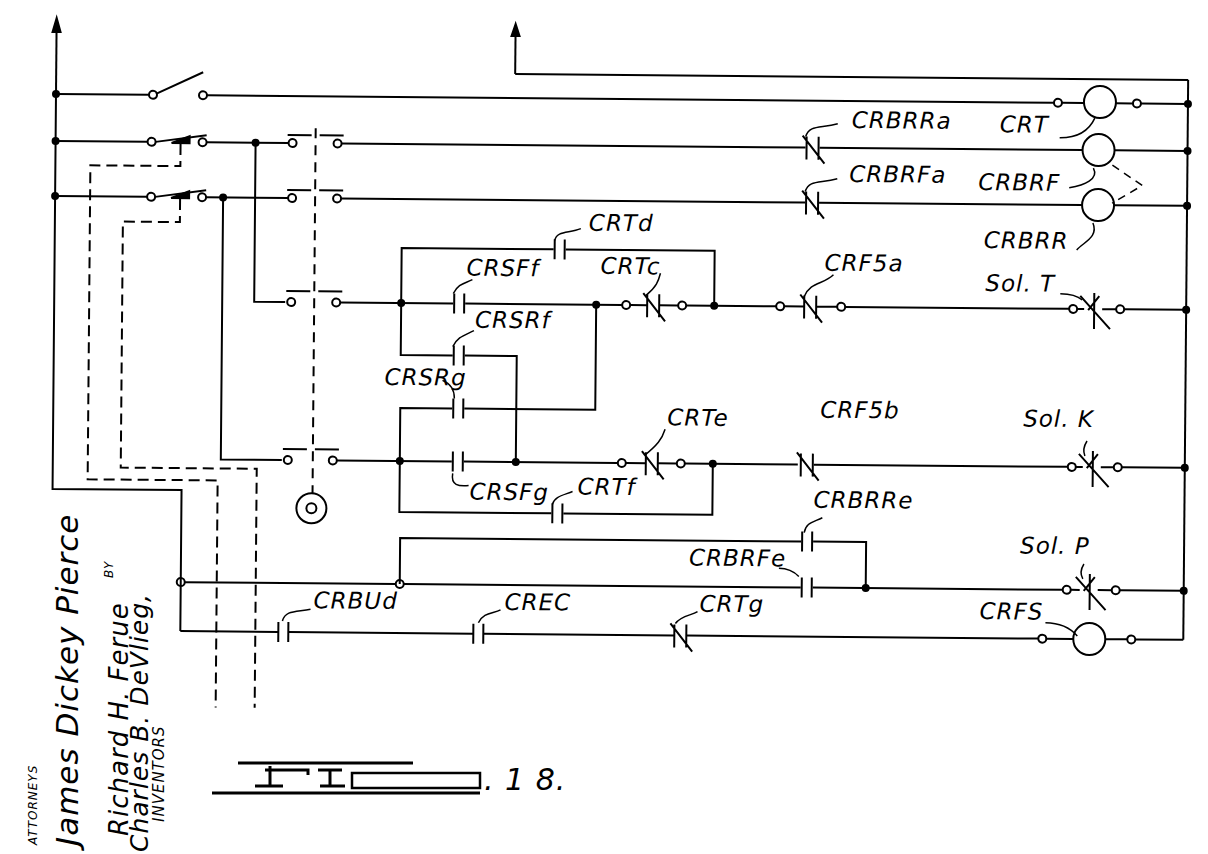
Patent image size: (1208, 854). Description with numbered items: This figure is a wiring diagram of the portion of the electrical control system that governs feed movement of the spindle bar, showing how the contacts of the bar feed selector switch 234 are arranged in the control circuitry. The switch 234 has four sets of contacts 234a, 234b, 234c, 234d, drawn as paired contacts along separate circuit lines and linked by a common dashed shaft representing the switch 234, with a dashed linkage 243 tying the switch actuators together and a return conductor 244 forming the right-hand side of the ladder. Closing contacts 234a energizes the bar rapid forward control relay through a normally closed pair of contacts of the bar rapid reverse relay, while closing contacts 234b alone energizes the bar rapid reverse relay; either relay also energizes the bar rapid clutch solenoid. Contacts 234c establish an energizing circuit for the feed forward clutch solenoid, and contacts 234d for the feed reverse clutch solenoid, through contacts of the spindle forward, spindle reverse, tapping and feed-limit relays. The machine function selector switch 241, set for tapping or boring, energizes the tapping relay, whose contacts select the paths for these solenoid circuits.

The machine function selector switch 241 is at (203, 71).
The contacts of the bar feed selector switch 234a is at (341, 145).
The contacts of the bar feed selector switch 234b is at (341, 200).
The contacts of the bar feed selector switch 234c is at (341, 305).
The contacts of the bar feed selector switch 234d is at (339, 462).
The bar feed selector switch 234 is at (314, 384).
The mechanical linkage 243 is at (54, 293).
The return bus conductor 244 is at (1188, 248).